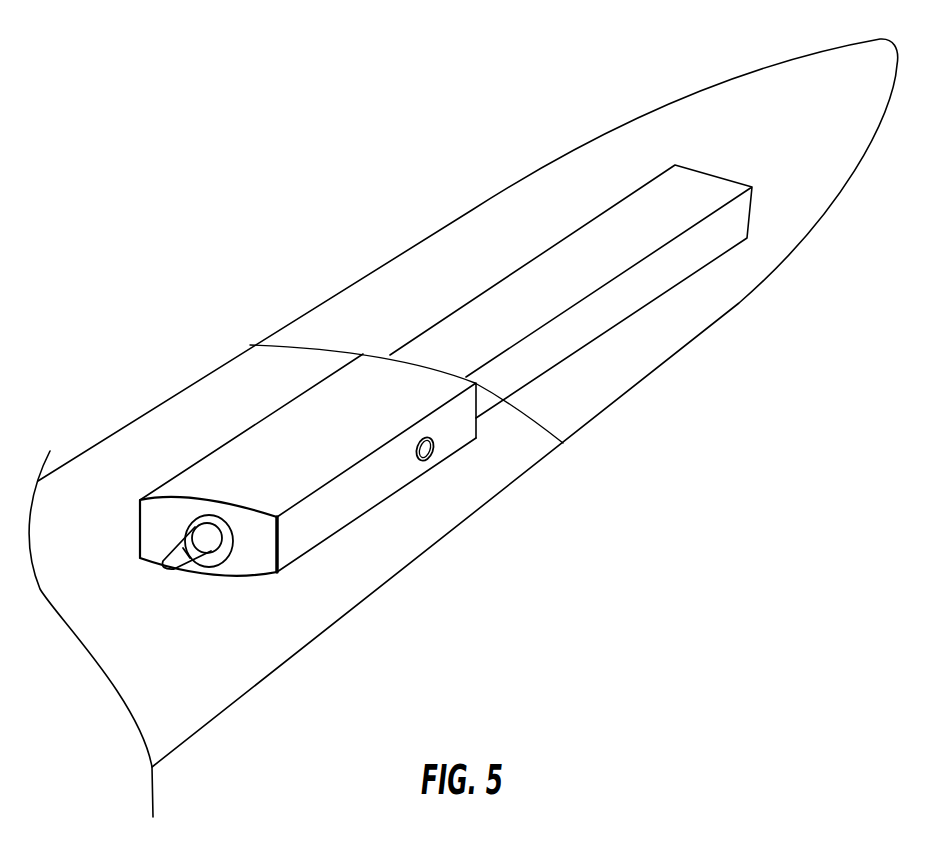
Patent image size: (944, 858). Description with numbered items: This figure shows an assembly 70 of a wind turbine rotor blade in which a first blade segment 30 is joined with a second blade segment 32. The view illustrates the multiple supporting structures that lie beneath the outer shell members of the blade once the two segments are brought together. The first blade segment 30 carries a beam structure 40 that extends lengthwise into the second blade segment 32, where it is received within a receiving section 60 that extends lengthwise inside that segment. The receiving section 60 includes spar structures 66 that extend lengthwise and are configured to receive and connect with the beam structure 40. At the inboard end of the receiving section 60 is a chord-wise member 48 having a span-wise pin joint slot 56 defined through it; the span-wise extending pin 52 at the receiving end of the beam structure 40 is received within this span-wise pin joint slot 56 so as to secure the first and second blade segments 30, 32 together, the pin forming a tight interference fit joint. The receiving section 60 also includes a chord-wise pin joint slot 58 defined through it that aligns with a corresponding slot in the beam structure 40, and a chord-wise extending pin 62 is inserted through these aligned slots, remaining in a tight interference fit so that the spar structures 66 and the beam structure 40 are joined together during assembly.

The first blade segment 30 is at (662, 108).
The second blade segment 32 is at (90, 466).
The beam structure 40 is at (503, 274).
The chord-wise member 48 is at (172, 517).
The span-wise extending pin 52 is at (178, 565).
The span-wise pin joint slot 56 is at (208, 516).
The chord-wise pin joint slot 58 is at (422, 461).
The receiving section 60 is at (344, 507).
The chord-wise extending pin 62 is at (433, 451).
The spar structures 66 is at (280, 405).
The assembly 70 is at (172, 192).